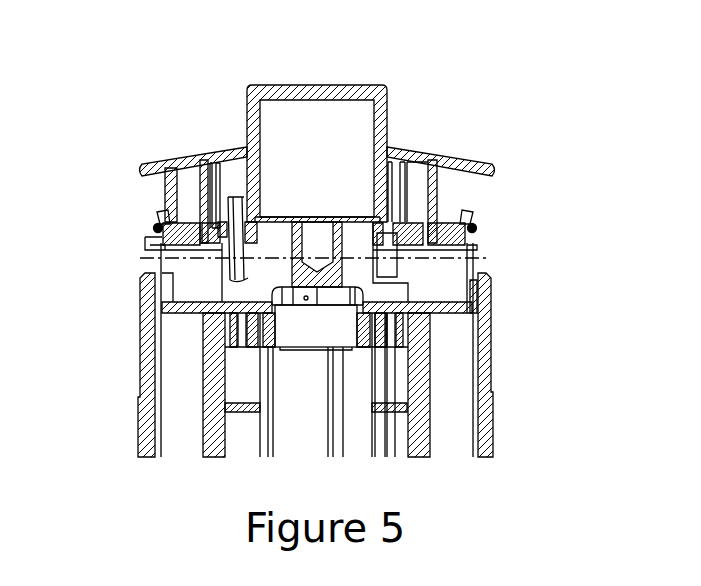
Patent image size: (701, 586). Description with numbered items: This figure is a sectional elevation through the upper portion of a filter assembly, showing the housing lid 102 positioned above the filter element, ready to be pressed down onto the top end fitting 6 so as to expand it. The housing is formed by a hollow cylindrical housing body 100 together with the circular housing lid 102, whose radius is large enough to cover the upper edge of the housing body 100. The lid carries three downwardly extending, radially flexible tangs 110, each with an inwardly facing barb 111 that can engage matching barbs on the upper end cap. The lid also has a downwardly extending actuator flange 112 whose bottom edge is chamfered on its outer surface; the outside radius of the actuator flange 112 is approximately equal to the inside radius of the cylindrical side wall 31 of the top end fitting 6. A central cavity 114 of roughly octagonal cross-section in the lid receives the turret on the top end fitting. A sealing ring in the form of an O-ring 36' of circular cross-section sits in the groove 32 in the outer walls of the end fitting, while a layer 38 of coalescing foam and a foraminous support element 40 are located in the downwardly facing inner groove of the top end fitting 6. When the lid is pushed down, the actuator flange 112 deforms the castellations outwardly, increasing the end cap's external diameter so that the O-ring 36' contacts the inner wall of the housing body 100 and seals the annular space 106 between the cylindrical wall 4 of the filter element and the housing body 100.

The central cavity 114 is at (317, 183).
The tangs 110 is at (202, 177).
The housing lid 102 is at (458, 155).
The actuator flange 112 is at (166, 196).
The groove 32 is at (153, 237).
The O-ring 36' is at (356, 219).
The side wall 31 is at (141, 267).
The barb 111 is at (408, 245).
The top end fitting 6 is at (443, 302).
The annular space 106 is at (153, 343).
The cylindrical wall 4 is at (175, 378).
The layer of coalescing foam 38 is at (210, 433).
The foraminous support element 40 is at (393, 403).
The housing body 100 is at (495, 418).